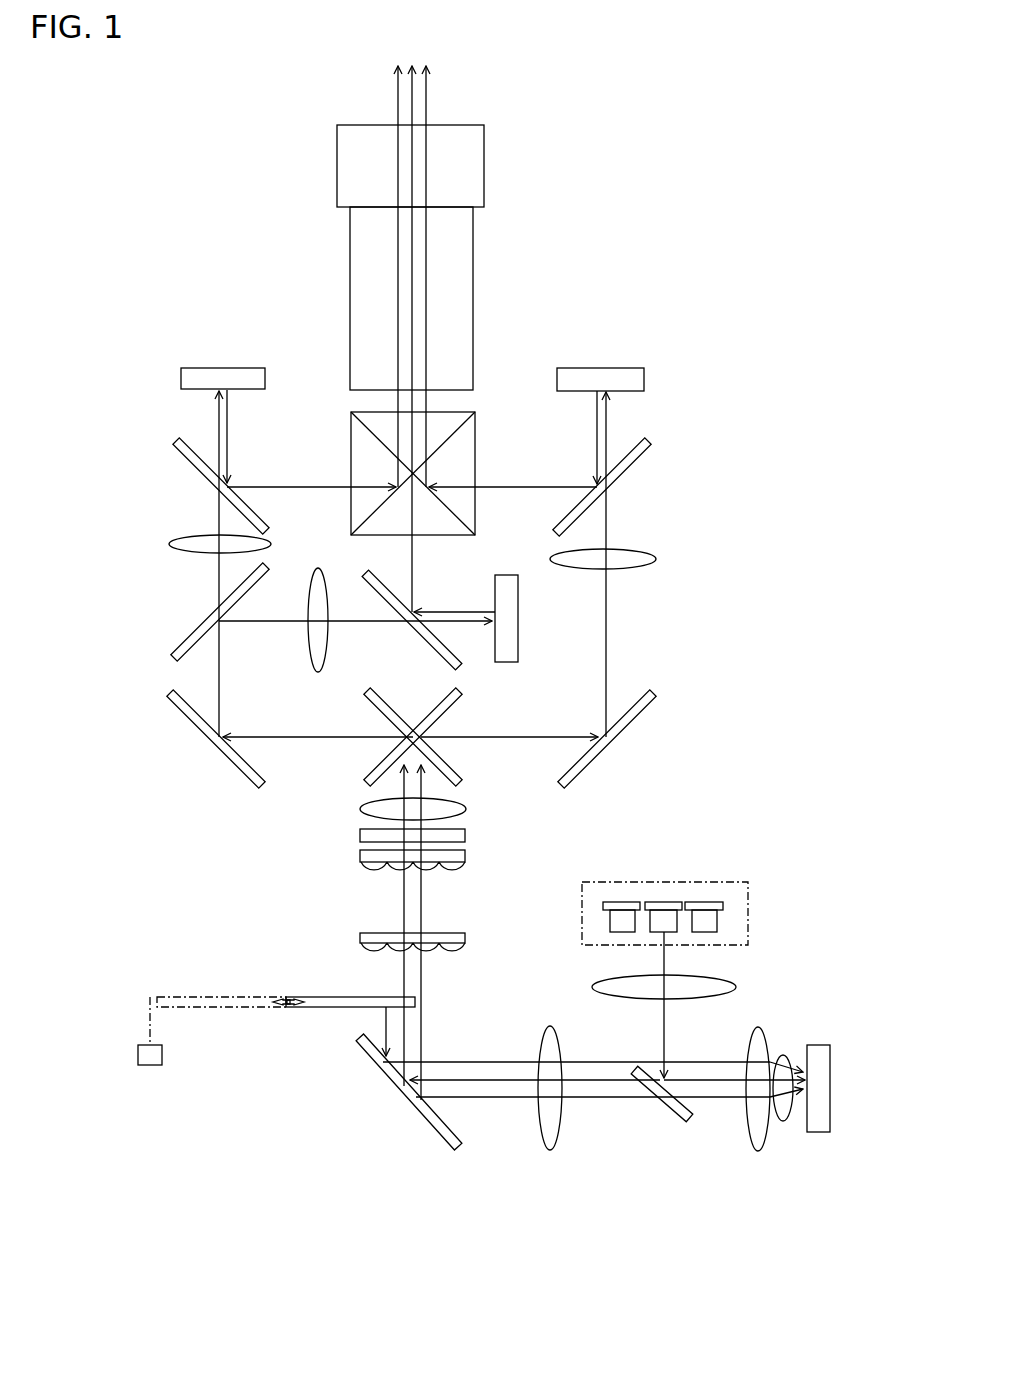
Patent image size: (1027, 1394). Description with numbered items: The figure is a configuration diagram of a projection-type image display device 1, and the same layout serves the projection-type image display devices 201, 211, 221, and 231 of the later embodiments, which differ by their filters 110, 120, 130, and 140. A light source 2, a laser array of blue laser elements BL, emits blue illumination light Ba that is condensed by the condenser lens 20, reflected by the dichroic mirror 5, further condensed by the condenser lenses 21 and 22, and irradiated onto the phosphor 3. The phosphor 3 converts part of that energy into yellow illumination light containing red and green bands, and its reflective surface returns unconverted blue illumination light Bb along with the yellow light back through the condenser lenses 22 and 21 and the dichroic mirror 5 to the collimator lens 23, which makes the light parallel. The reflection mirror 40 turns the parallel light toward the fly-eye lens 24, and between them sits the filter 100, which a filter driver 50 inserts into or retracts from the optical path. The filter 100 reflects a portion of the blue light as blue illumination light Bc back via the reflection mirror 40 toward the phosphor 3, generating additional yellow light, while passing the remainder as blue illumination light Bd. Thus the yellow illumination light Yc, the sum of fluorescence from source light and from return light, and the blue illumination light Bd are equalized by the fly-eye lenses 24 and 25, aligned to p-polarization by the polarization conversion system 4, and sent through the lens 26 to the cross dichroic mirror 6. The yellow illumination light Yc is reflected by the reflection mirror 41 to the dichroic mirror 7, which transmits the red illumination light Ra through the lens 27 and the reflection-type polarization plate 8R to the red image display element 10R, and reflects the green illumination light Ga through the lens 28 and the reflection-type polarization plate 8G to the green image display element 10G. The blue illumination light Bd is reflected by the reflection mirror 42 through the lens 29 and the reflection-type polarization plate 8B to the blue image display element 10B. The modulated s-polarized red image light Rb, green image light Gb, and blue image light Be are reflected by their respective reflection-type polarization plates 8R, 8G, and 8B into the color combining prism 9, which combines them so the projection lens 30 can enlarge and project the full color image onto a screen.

The projection-type image display device 1 is at (471, 650).
The projection-type image display device 201 is at (471, 650).
The projection-type image display device 211 is at (471, 650).
The projection-type image display device 221 is at (471, 650).
The projection-type image display device 231 is at (668, 188).
The light source 2 is at (689, 896).
The blue laser element BL is at (720, 925).
The phosphor 3 is at (817, 1045).
The polarization conversion system 4 is at (360, 836).
The dichroic mirror 5 is at (670, 1113).
The cross dichroic mirror 6 is at (450, 710).
The dichroic mirror 7 is at (185, 641).
The reflection-type polarization plate 8R is at (190, 457).
The reflection-type polarization plate 8G is at (430, 655).
The reflection-type polarization plate 8B is at (645, 455).
The color combining prism 9 is at (476, 418).
The red image display element 10R is at (218, 368).
The green image display element 10G is at (519, 631).
The blue image display element 10B is at (645, 379).
The condenser lens 20 is at (735, 985).
The condenser lens 21 is at (758, 1152).
The condenser lens 22 is at (783, 1122).
The collimator lens 23 is at (550, 1150).
The fly-eye lens 24 is at (438, 931).
The fly-eye lens 25 is at (360, 857).
The lens 26 is at (362, 805).
The lens 27 is at (170, 545).
The lens 28 is at (308, 643).
The lens 29 is at (657, 559).
The projection lens 30 is at (473, 300).
The reflection mirror 40 is at (425, 1120).
The reflection mirror 41 is at (190, 724).
The reflection mirror 42 is at (645, 712).
The filter driver 50 is at (150, 1068).
The filter 100 is at (282, 973).
The filter 110 is at (282, 973).
The filter 120 is at (282, 973).
The filter 130 is at (282, 973).
The filter 140 is at (290, 997).
The red illumination light Ra is at (217, 428).
The red image light Rb is at (398, 240).
The green illumination light Ga is at (283, 620).
The green image light Gb is at (412, 305).
The blue illumination light Ba is at (666, 1013).
The blue illumination light Bb is at (420, 1042).
The blue illumination light Bc is at (384, 1026).
The blue illumination light Bd is at (608, 428).
The blue image light Be is at (426, 254).
The yellow illumination light Yc is at (215, 678).